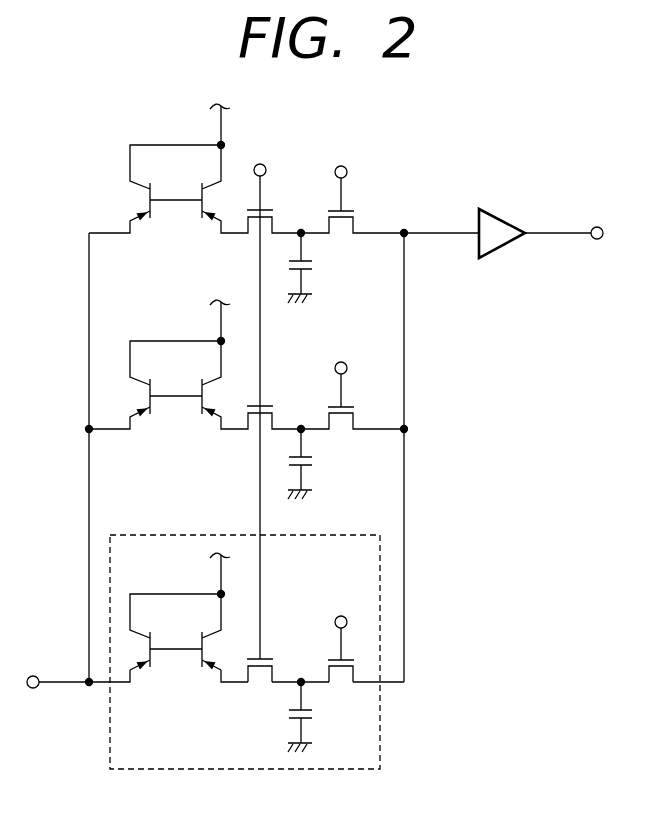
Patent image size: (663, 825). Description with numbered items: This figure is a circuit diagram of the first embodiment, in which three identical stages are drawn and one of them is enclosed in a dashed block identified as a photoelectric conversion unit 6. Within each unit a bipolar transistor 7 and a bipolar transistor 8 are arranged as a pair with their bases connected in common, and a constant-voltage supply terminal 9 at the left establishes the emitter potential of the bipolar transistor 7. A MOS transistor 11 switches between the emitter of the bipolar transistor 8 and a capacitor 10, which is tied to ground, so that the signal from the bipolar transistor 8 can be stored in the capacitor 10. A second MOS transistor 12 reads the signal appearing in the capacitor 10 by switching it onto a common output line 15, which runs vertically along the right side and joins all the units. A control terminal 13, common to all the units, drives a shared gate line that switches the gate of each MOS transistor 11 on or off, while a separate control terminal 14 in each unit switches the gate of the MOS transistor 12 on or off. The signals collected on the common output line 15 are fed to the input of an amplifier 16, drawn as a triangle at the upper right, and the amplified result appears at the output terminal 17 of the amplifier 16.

The photoelectric conversion unit 6 is at (331, 534).
The bipolar transistor 7 is at (150, 668).
The bipolar transistor 8 is at (201, 668).
The constant-voltage supply terminal 9 is at (36, 675).
The capacitor 10 is at (314, 713).
The MOS transistor 11 is at (261, 685).
The MOS transistor 12 is at (327, 670).
The control terminal 13 is at (260, 163).
The control terminal 14 is at (342, 615).
The common output line 15 is at (406, 328).
The amplifier 16 is at (505, 221).
The output terminal 17 is at (598, 227).